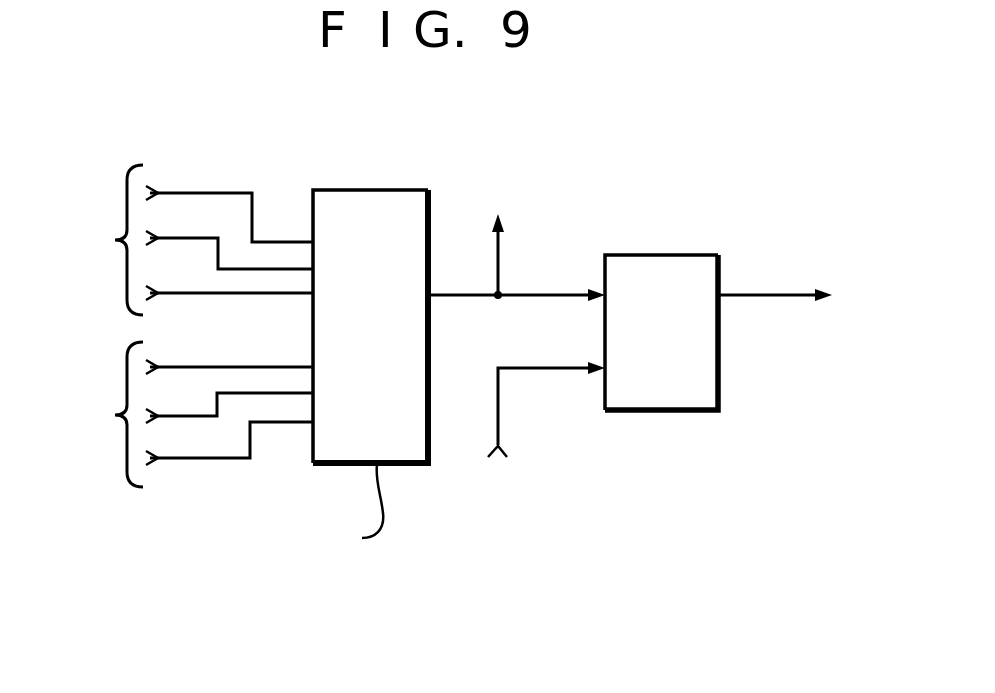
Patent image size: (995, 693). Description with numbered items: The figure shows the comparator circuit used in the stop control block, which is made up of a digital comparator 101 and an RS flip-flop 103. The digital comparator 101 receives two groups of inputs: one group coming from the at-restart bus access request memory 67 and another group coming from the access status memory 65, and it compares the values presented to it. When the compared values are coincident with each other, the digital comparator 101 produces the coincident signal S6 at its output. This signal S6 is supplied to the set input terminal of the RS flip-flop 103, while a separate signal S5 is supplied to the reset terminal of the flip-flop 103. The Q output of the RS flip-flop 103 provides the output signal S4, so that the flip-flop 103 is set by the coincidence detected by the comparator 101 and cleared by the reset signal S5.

The digital comparator 101 is at (316, 126).
The RS flip-flop 103 is at (683, 208).
The at-restart bus access request memory 67 is at (170, 240).
The access status memory 65 is at (170, 414).
The signal S4 is at (793, 295).
The signal S5 is at (542, 426).
The coincident signal S6 is at (500, 239).